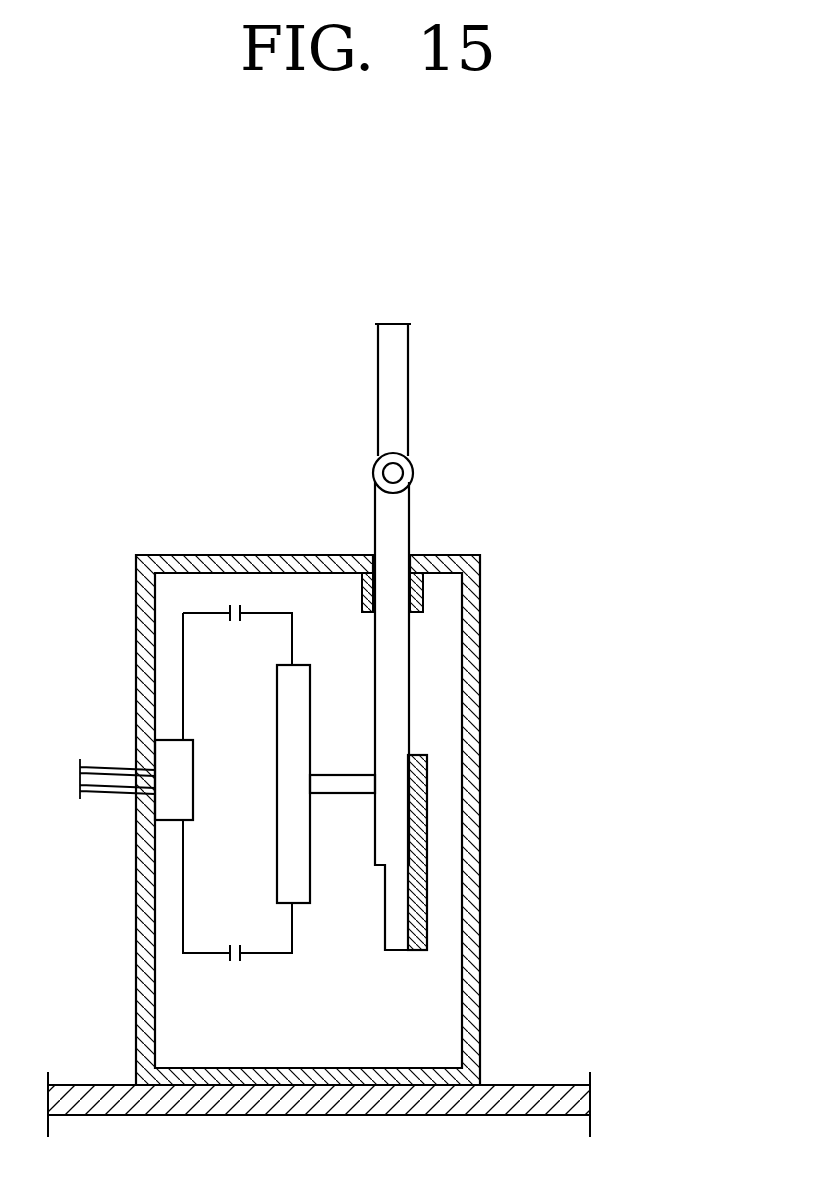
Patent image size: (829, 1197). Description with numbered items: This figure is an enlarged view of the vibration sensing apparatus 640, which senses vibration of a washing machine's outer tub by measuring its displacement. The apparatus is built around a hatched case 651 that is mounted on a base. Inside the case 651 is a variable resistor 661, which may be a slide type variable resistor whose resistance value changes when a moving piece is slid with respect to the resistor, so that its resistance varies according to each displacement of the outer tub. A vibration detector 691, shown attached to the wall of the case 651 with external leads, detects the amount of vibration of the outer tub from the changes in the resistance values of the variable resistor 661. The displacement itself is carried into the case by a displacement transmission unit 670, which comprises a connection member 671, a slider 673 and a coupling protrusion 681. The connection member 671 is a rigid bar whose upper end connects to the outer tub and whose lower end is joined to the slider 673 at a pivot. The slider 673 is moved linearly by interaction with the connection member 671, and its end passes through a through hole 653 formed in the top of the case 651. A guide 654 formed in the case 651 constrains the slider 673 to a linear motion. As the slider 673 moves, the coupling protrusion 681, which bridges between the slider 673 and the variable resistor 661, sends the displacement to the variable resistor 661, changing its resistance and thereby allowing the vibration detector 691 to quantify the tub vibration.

The vibration sensing apparatus 640 is at (124, 453).
The case 651 is at (472, 752).
The through hole 653 is at (380, 575).
The guide 654 is at (408, 912).
The variable resistor 661 is at (288, 883).
The displacement transmission unit 670 is at (623, 393).
The connection member 671 is at (397, 396).
The slider 673 is at (402, 525).
The coupling protrusion 681 is at (340, 775).
The vibration detector 691 is at (168, 805).